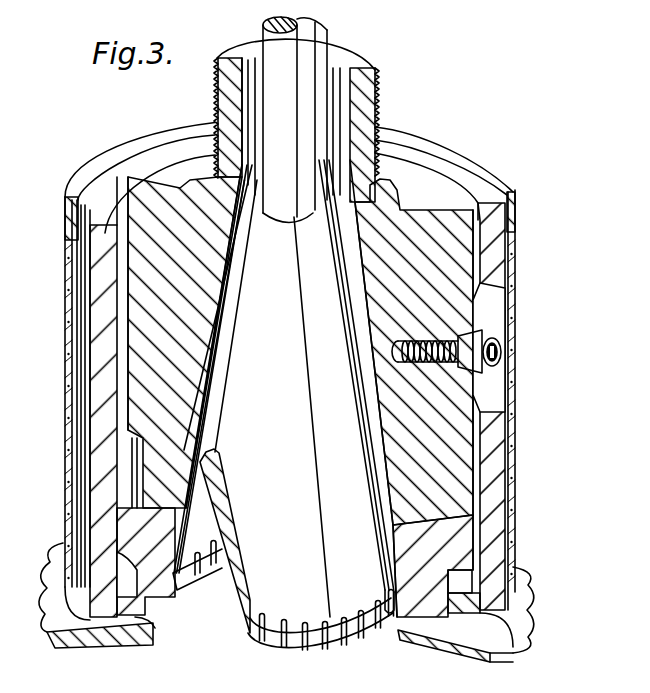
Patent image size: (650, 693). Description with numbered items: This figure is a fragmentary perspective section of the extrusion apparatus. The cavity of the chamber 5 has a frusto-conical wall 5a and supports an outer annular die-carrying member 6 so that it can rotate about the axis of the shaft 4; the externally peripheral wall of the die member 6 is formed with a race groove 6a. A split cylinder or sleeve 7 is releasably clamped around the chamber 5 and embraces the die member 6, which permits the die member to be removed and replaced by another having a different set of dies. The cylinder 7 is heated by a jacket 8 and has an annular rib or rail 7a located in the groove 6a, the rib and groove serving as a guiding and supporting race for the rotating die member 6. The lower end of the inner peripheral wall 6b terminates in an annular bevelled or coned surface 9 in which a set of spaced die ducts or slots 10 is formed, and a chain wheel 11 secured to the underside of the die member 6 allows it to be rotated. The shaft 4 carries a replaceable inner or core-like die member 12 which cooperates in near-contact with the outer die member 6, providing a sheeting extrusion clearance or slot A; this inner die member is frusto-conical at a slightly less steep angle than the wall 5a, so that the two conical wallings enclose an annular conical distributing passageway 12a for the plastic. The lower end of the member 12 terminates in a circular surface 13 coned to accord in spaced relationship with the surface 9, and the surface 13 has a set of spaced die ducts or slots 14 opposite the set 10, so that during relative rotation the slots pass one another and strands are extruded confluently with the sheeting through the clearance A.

The shaft 4 is at (300, 53).
The chamber 5 is at (145, 258).
The frusto-conical wall 5a is at (360, 301).
The outer annular die-carrying member 6 is at (135, 530).
The race groove 6a is at (450, 597).
The inner peripheral wall 6b is at (393, 623).
The split cylinder or sleeve 7 is at (105, 300).
The annular rib or rail 7a is at (125, 595).
The jacket 8 is at (68, 333).
The annular bevelled or coned surface 9 is at (222, 548).
The die ducts or slots 10 is at (197, 573).
The chain wheel 11 is at (117, 640).
The inner or core-like die member 12 is at (306, 524).
The annular conical distributing passageway or cavity 12a is at (347, 248).
The circular surface 13 is at (352, 627).
The die ducts or slots 14 is at (270, 635).
The sheeting extrusion clearance or slot A is at (395, 617).